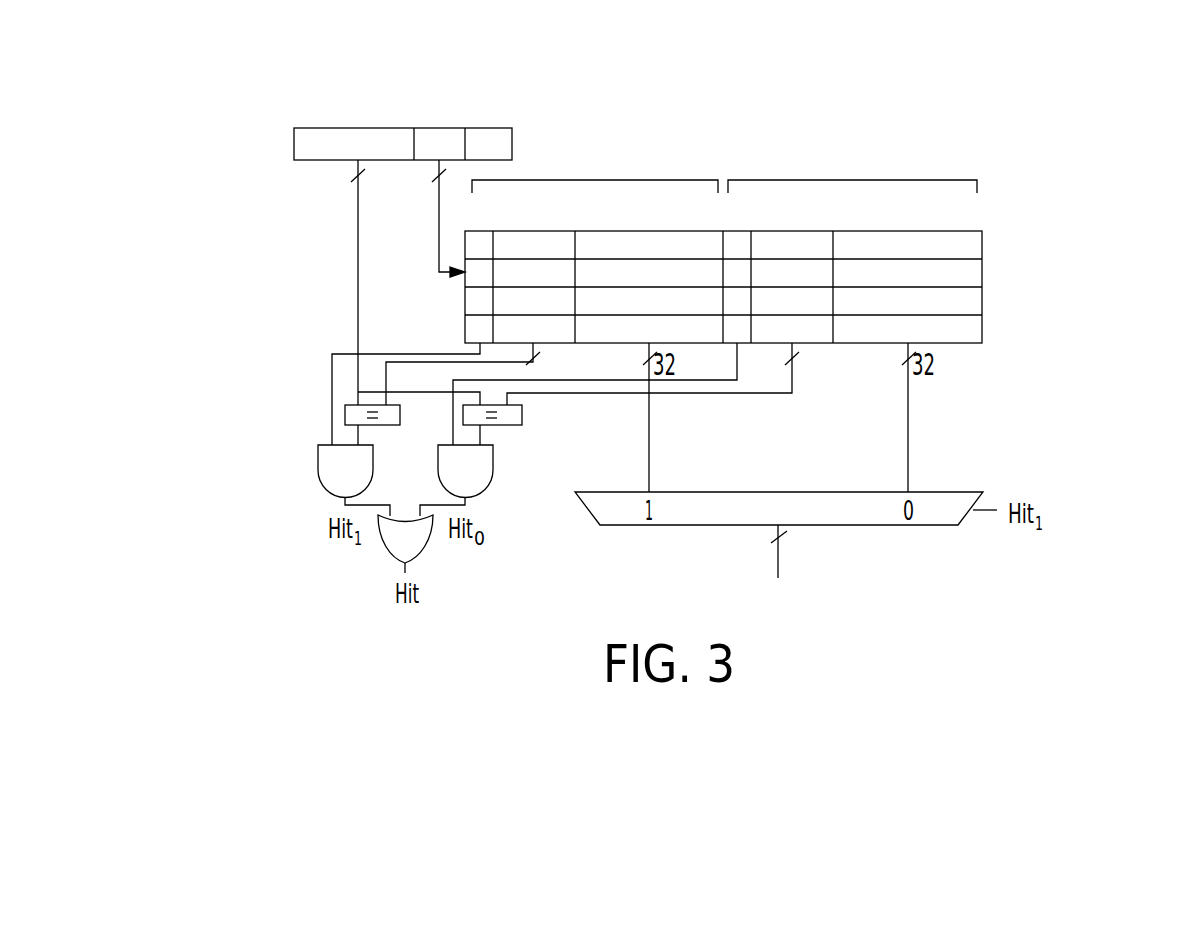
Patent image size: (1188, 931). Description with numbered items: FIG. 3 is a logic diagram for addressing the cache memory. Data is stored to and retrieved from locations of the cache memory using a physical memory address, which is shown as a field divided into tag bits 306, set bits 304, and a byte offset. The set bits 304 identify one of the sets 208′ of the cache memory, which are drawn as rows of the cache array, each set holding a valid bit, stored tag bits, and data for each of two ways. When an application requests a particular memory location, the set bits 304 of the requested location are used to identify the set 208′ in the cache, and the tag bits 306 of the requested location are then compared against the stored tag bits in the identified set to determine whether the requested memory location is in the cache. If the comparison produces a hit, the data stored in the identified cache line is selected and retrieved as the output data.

The set bits 304 is at (443, 88).
The tag bits 306 is at (348, 88).
The set 208′ is at (1052, 232).